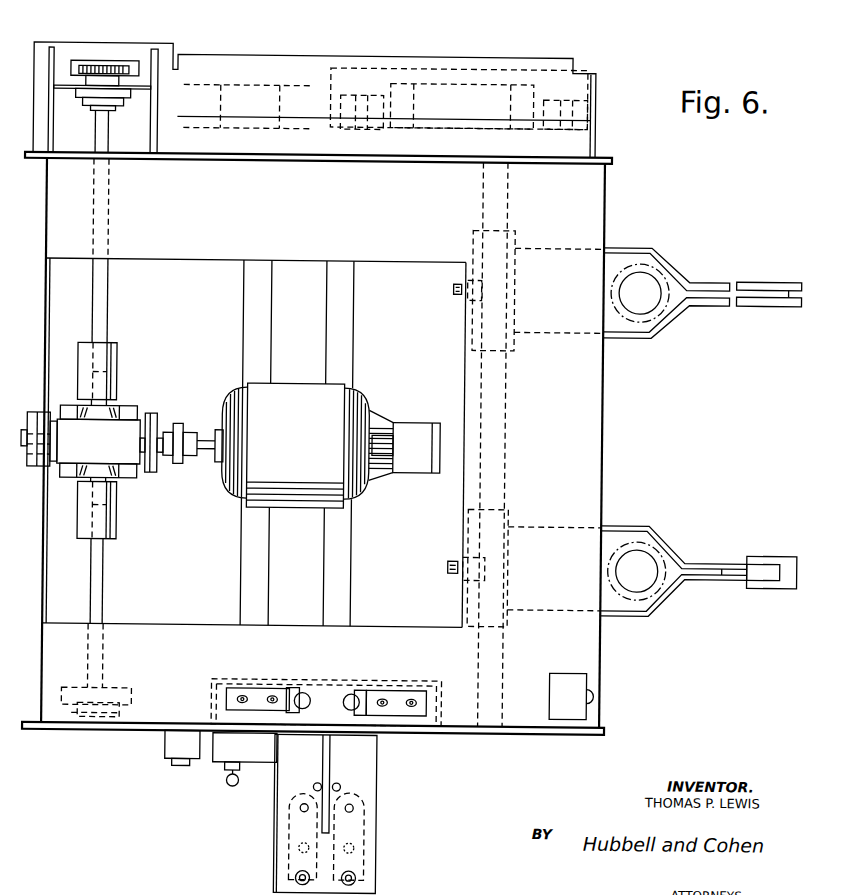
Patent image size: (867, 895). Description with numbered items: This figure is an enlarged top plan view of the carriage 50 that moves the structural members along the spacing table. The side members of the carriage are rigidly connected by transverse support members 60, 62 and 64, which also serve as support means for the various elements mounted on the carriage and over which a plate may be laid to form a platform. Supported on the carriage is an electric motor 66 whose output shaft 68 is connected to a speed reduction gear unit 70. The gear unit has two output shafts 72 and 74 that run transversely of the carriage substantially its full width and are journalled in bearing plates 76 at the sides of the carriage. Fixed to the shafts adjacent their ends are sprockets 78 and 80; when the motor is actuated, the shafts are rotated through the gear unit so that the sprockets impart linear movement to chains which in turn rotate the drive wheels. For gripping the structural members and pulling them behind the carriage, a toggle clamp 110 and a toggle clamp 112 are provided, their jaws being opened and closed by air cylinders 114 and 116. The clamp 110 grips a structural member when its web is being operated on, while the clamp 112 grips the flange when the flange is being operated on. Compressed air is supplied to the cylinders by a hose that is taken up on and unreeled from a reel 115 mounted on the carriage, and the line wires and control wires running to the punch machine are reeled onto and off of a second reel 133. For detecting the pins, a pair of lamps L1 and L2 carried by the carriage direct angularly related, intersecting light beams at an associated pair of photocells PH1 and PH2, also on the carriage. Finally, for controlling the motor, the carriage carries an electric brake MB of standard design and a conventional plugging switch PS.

The carriage 50 is at (615, 197).
The transverse support member 60 is at (552, 440).
The transverse support member 62 is at (305, 316).
The transverse support member 64 is at (85, 323).
The electric motor 66 is at (310, 436).
The output shaft 68 is at (206, 433).
The speed reduction gear unit 70 is at (106, 452).
The output shaft 72 is at (98, 277).
The output shaft 74 is at (96, 561).
The bearing plate 76 is at (136, 89).
The sprocket 78 is at (102, 62).
The sprocket 80 is at (96, 733).
The toggle clamp 110 is at (730, 576).
The toggle clamp 112 is at (763, 300).
The air cylinder 114 is at (624, 537).
The reel 115 is at (484, 86).
The air cylinder 116 is at (623, 257).
The reel 133 is at (236, 88).
The electric brake MB is at (151, 469).
The plugging switch PS is at (415, 458).
The photocell PH1 is at (358, 689).
The photocell PH2 is at (309, 688).
The lamp L1 is at (297, 844).
The lamp L2 is at (352, 844).